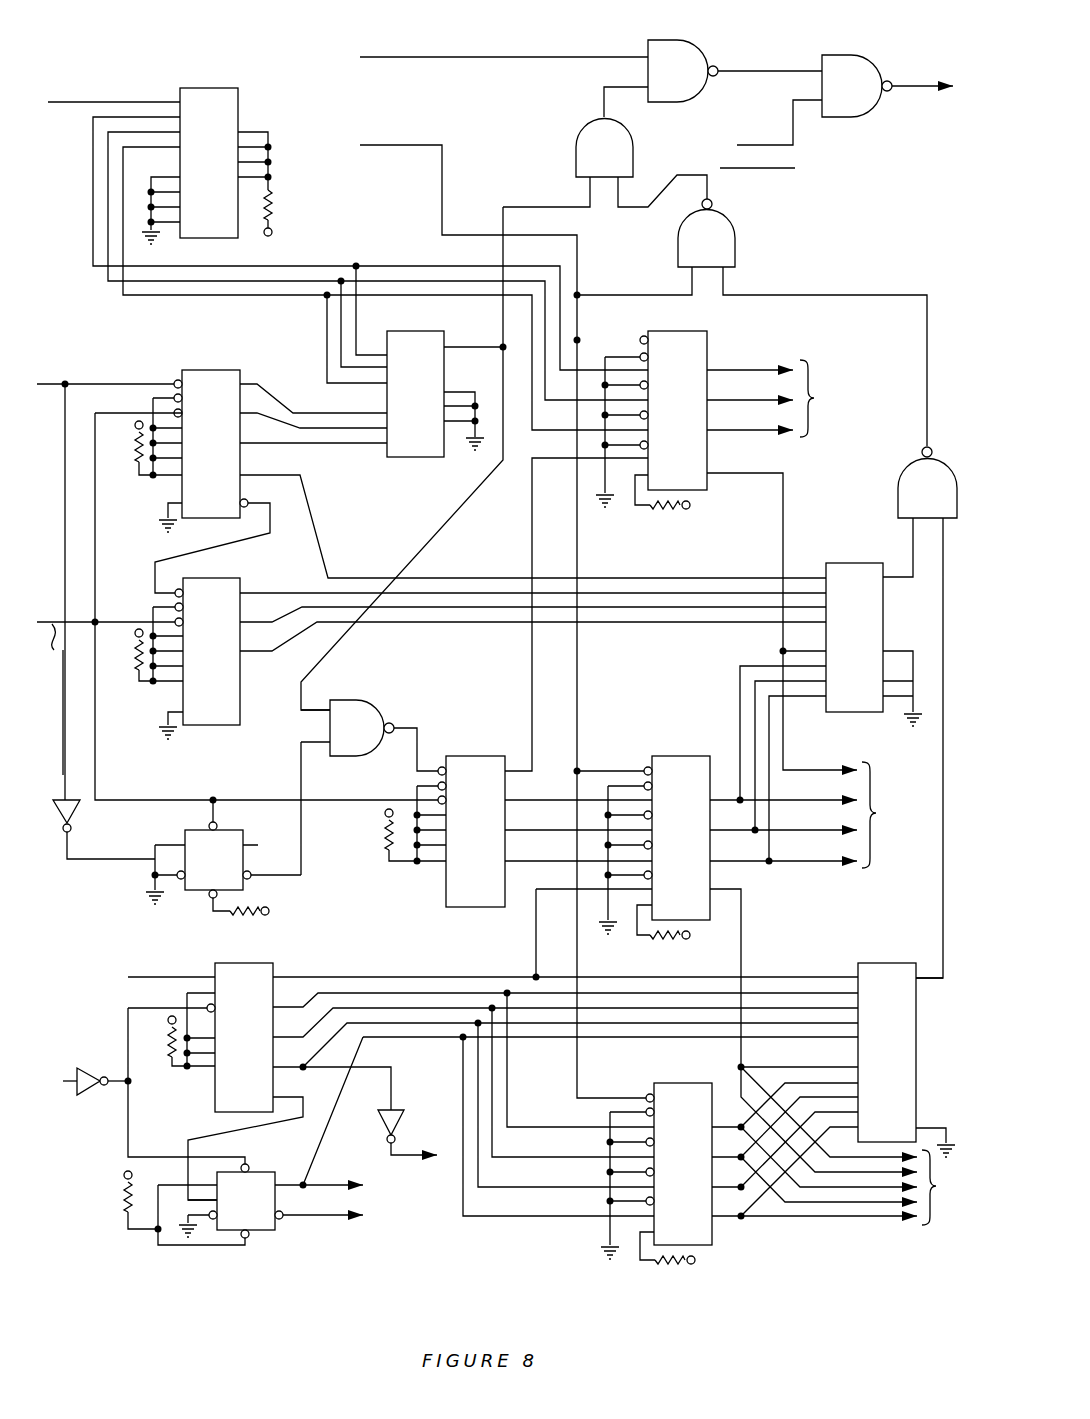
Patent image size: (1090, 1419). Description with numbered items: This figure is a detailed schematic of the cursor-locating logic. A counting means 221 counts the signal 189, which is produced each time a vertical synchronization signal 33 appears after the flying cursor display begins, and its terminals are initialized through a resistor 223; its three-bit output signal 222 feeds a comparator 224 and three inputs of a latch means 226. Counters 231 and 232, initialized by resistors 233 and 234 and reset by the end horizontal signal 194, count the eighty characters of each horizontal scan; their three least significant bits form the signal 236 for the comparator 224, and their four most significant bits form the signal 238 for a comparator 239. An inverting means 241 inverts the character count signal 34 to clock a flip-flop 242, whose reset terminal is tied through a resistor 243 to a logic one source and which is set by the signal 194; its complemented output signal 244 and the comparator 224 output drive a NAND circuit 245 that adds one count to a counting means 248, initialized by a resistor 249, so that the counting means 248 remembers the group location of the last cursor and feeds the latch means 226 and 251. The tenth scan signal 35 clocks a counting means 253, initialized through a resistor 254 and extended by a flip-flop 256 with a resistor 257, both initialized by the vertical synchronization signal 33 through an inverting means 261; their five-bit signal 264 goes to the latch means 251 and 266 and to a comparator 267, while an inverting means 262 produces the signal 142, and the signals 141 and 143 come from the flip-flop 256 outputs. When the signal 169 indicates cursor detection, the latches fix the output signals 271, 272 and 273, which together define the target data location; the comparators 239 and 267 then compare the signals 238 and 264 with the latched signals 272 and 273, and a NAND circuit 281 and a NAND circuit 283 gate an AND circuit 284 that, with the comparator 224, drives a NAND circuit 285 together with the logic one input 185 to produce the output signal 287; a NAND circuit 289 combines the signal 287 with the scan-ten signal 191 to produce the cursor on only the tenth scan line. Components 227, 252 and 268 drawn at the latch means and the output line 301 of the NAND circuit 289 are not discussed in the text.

The signal 189 is at (106, 102).
The counting means 221 is at (240, 96).
The resistor 223 is at (276, 196).
The logic 1 input signal 185 is at (430, 56).
The latch signal 169 is at (414, 144).
The three-bit binary output signal 222 is at (392, 266).
The comparator 224 is at (435, 332).
The AND circuit 284 is at (605, 147).
The NAND circuit 283 is at (752, 322).
The NAND circuit 285 is at (683, 71).
The output signal 287 is at (763, 70).
The NAND circuit 289 is at (857, 86).
The output line 301 is at (910, 85).
The scan 10 signal 191 is at (765, 143).
The latch means 226 is at (712, 336).
The output signal 271 is at (779, 398).
The pull-up resistor 227 is at (666, 511).
The counting means 231 is at (211, 370).
The character count signal 34 is at (50, 388).
The resistor 233 is at (132, 458).
The signal 236 is at (341, 444).
The end horizontal signal 194 is at (80, 616).
The counting means 232 is at (245, 582).
The resistor 234 is at (132, 668).
The signal 238 is at (476, 578).
The comparator 239 is at (849, 563).
The NAND circuit 281 is at (920, 712).
The inverting means 241 is at (84, 811).
The flip-flop 242 is at (223, 826).
The resistor 243 is at (240, 918).
The Q-bar output signal 244 is at (305, 875).
The NAND circuit 245 is at (373, 735).
The counting means 248 is at (478, 755).
The resistor 249 is at (370, 843).
The latch means 251 is at (675, 755).
The pull-up resistor 252 is at (688, 936).
The output signal 272 is at (813, 670).
The counting means 253 is at (273, 963).
The tenth scan signal 35 is at (187, 977).
The five-bit output signal 264 is at (368, 977).
The inverting means 261 is at (109, 1072).
The vertical synchronization signal 33 is at (66, 1072).
The resistor 254 is at (168, 1064).
The inverting means 262 is at (394, 1109).
The signal 142 is at (406, 1154).
The flip-flop 256 is at (215, 1204).
The resistor 257 is at (116, 1208).
The signal 143 is at (328, 1185).
The signal 141 is at (311, 1216).
The latch means 266 is at (692, 1082).
The pull-up resistor 268 is at (684, 1266).
The comparator 267 is at (880, 963).
The output signal 273 is at (835, 1146).